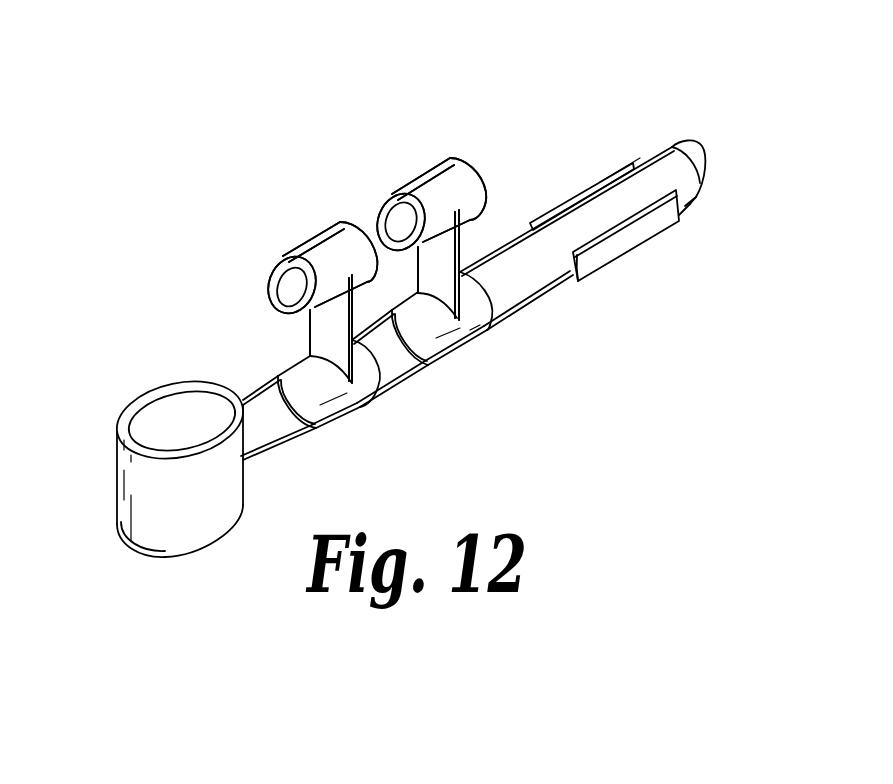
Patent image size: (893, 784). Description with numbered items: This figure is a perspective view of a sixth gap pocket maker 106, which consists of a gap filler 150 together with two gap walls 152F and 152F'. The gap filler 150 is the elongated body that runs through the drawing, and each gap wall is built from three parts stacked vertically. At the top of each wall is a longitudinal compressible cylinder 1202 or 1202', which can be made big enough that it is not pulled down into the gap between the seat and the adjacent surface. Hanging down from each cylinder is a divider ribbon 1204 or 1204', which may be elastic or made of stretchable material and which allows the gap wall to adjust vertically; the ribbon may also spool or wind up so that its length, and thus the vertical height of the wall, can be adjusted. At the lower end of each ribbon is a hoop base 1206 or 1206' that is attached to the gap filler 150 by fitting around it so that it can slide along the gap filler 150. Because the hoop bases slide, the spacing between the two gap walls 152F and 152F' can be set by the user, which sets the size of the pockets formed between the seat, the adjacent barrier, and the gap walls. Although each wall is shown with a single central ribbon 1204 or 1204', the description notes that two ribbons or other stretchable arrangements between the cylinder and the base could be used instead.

The sixth gap pocket maker 106 is at (161, 76).
The gap filler 150 is at (557, 230).
The gap wall 152F is at (263, 268).
The gap wall 152F' is at (375, 205).
The longitudinal compressible cylinder 1202 is at (273, 271).
The longitudinal compressible cylinder 1202' is at (474, 158).
The divider ribbon 1204 is at (214, 329).
The divider ribbon 1204' is at (577, 211).
The hoop base 1206 is at (432, 396).
The hoop base 1206' is at (549, 327).